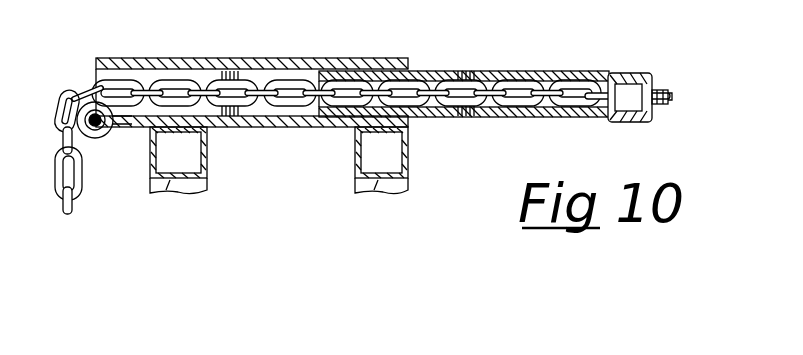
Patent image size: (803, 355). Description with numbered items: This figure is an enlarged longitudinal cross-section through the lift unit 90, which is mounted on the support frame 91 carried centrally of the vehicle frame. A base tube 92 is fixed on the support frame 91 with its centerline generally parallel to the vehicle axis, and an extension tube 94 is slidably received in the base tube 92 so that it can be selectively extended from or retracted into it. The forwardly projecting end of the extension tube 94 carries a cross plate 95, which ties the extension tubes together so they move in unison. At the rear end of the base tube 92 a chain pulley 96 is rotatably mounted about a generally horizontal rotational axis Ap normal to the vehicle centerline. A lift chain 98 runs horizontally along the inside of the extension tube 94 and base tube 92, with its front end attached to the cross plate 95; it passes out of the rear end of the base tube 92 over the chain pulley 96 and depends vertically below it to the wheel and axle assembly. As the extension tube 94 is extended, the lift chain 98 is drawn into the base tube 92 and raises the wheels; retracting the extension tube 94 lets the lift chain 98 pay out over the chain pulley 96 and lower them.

The lift unit 90 is at (449, 22).
The support frame 91 is at (205, 191).
The base tube 92 is at (283, 59).
The extension tube 94 is at (536, 70).
The cross plate 95 is at (622, 74).
The chain pulley 96 is at (93, 138).
The lift chain 98 is at (55, 179).
The rotational axis Ap is at (103, 128).